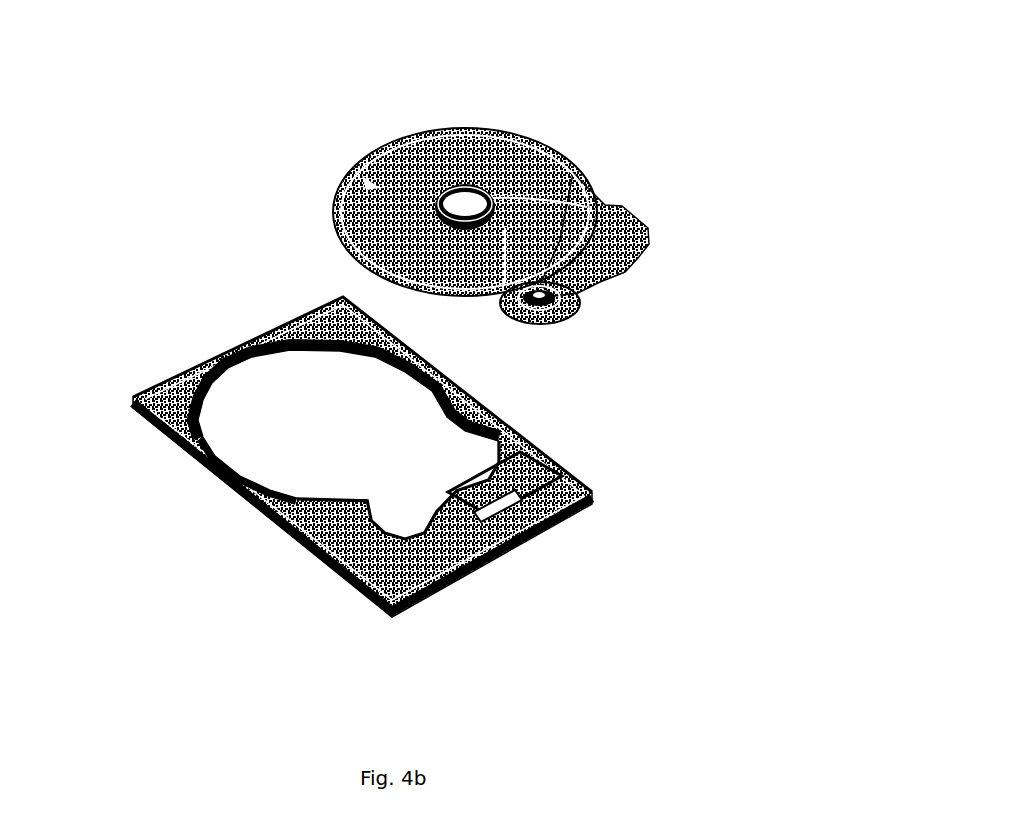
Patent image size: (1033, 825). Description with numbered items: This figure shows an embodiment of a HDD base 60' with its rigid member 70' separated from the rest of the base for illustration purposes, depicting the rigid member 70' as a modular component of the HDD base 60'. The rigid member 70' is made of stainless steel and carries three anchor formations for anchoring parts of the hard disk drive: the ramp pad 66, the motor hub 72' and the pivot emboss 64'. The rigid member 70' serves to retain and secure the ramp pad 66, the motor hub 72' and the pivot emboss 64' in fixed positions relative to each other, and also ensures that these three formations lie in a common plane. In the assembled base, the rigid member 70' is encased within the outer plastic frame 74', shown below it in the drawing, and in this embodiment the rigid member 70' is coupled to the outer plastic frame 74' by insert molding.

The HDD base 60' is at (379, 355).
The pivot emboss 64' is at (604, 346).
The ramp pad 66 is at (625, 212).
The rigid member 70' is at (489, 228).
The motor hub 72' is at (549, 137).
The outer plastic frame 74' is at (307, 457).